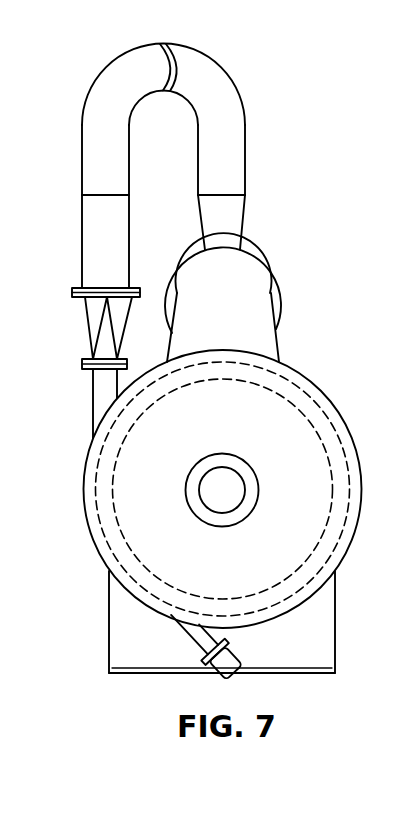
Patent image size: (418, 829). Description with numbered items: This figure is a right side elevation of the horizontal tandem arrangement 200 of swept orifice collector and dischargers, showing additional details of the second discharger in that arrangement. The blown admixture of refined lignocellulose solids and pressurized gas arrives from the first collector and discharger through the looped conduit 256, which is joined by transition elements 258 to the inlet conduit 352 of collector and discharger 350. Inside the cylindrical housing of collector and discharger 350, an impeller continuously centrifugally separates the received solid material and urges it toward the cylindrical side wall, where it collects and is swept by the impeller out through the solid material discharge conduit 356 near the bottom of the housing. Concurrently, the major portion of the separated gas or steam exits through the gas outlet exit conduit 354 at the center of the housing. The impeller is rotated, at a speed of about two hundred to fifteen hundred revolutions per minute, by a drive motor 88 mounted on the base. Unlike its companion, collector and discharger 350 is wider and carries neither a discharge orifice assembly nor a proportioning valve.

The horizontal tandem arrangement 200 is at (172, 229).
The conduit 256 is at (246, 137).
The transition elements 258 is at (88, 338).
The inlet conduit 352 is at (93, 408).
The drive motor 88 is at (267, 263).
The swept orifice collector and discharger 350 is at (350, 398).
The gas outlet exit conduit 354 is at (234, 470).
The solid material discharge conduit 356 is at (184, 629).